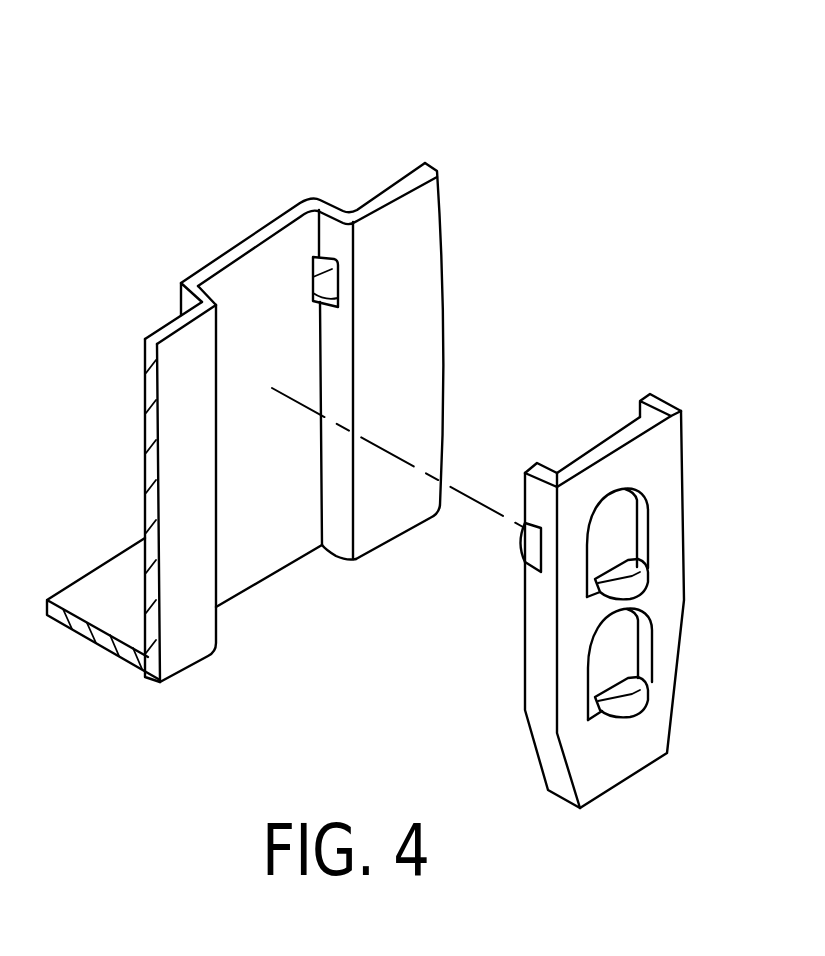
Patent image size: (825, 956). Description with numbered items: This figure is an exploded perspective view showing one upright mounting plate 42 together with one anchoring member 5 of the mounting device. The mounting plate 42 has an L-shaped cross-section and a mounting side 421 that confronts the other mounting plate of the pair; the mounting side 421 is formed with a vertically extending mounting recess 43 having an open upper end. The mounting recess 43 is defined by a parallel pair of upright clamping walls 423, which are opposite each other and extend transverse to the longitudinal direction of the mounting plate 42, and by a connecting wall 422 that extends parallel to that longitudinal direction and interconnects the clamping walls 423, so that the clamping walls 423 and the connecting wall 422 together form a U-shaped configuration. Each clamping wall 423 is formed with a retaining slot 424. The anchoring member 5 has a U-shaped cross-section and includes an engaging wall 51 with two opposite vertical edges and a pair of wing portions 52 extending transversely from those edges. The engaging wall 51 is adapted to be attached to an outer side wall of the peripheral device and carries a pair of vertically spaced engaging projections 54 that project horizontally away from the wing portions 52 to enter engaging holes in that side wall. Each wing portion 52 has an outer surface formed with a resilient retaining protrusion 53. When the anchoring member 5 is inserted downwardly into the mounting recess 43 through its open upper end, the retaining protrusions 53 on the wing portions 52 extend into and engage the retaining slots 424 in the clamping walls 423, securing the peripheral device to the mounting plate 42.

The mounting plate 42 is at (260, 366).
The mounting side 421 is at (404, 216).
The connecting wall 422 is at (232, 297).
The clamping wall 423 is at (332, 236).
The retaining slot 424 is at (312, 278).
The mounting recess 43 is at (217, 270).
The anchoring member 5 is at (598, 536).
The engaging wall 51 is at (667, 532).
The wing portion 52 is at (660, 398).
The resilient retaining protrusion 53 is at (523, 556).
The engaging projection 54 is at (646, 576).